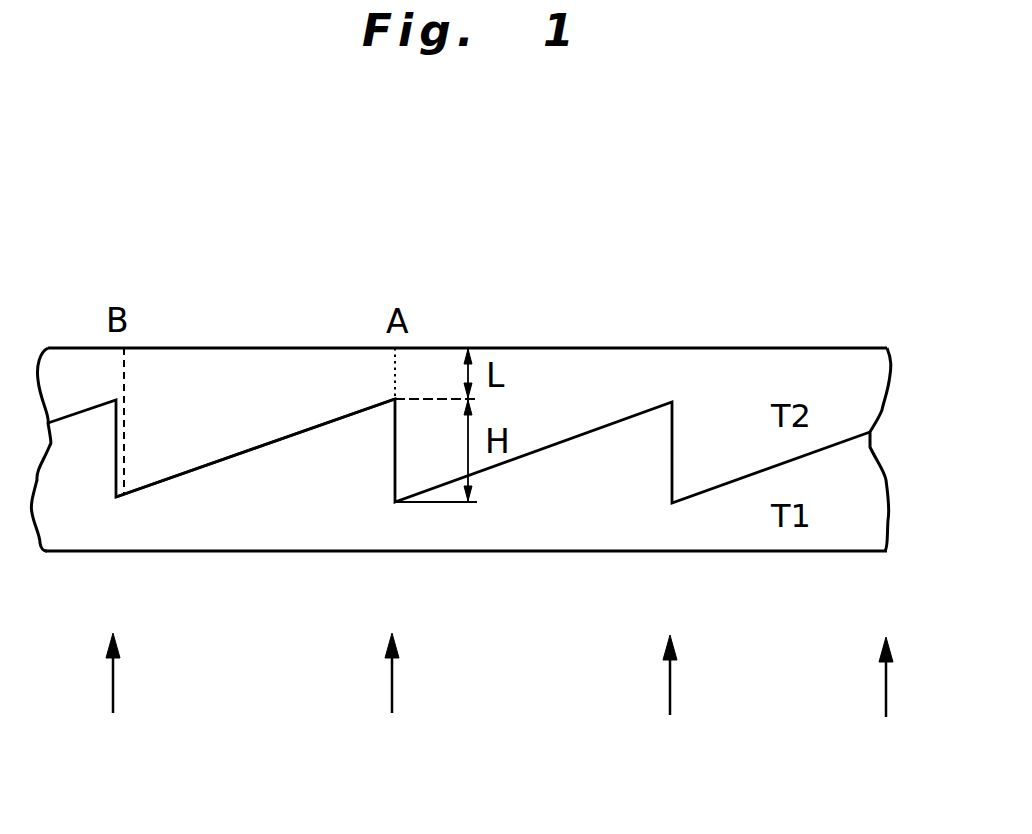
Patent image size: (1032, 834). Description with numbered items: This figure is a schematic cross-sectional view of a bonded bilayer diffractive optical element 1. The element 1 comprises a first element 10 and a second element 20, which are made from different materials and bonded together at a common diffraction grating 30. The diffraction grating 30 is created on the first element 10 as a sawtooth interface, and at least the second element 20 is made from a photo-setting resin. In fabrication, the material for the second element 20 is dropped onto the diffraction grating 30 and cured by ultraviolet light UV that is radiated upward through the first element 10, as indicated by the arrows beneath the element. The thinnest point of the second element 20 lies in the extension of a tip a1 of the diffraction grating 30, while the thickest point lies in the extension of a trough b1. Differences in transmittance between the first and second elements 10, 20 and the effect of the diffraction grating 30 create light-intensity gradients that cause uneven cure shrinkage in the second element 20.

The diffractive optical element 1 is at (797, 296).
The first element 10 is at (583, 535).
The second element 20 is at (598, 372).
The diffraction grating 30 is at (237, 454).
The tips of the diffraction grating a1 is at (390, 402).
The troughs of the diffraction grating b1 is at (112, 500).
The ultraviolet light UV is at (393, 703).